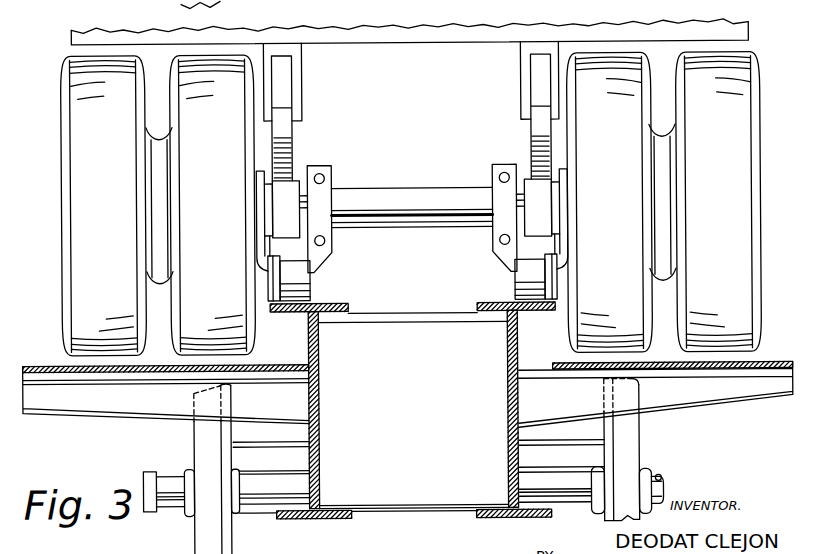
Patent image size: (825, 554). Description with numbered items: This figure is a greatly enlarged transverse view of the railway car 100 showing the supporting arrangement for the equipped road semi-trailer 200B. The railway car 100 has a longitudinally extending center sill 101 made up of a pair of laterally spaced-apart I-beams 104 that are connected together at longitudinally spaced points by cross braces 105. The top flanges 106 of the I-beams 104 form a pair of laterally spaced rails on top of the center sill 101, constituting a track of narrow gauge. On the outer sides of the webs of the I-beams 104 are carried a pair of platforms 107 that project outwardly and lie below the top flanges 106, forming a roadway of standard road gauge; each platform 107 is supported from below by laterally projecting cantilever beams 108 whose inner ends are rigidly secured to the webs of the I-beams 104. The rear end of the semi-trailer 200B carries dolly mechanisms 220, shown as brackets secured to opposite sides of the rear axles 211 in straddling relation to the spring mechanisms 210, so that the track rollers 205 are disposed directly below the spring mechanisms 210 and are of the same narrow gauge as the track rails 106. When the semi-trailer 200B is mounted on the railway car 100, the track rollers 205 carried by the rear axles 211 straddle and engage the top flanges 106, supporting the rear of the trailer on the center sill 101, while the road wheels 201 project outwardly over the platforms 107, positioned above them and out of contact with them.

The equipped road semi-trailer 200B is at (90, 14).
The road wheels 201 is at (102, 138).
The spring mechanisms 210 is at (293, 147).
The dolly mechanisms 220 is at (333, 180).
The rear axles 211 is at (451, 174).
The track rollers 205 is at (298, 278).
The top flanges 106 is at (350, 308).
The railway car 100 is at (430, 284).
The center sill 101 is at (322, 447).
The cross braces 105 is at (448, 495).
The platforms 107 is at (288, 349).
The cantilever beams 108 is at (753, 402).
The I-beams 104 is at (318, 476).